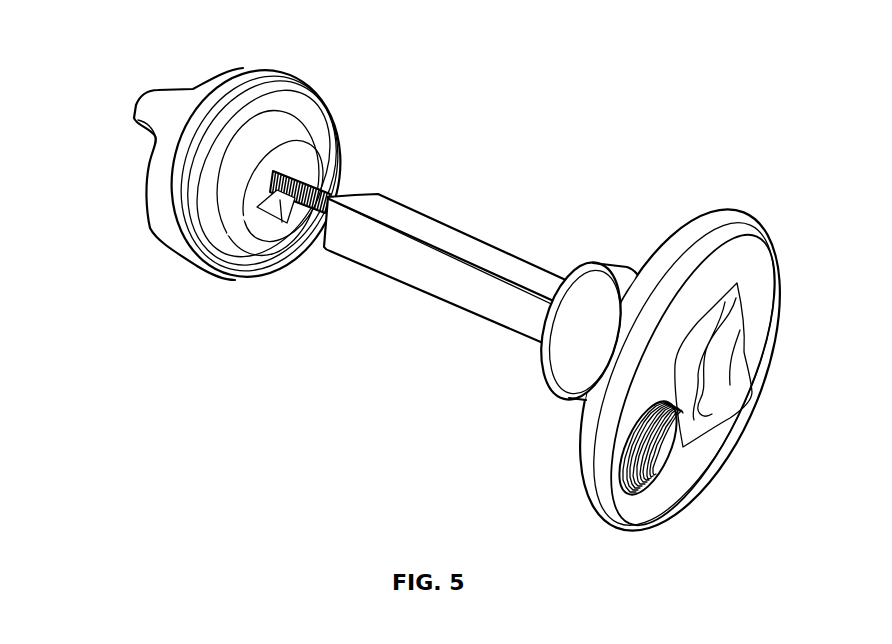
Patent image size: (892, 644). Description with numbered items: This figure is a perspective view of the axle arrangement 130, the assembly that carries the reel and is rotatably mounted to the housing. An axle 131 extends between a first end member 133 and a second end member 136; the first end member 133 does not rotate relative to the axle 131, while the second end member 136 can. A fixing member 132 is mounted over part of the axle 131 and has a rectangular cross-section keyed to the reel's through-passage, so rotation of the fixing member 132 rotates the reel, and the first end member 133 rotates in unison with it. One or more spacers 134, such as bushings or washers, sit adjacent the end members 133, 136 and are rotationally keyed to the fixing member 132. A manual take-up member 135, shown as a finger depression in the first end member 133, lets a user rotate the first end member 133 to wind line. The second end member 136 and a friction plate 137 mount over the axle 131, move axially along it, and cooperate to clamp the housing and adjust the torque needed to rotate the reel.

The axle arrangement 130 is at (482, 216).
The axle 131 is at (304, 170).
The fixing member 132 is at (442, 275).
The first end member 133 is at (749, 211).
The spacer 134 is at (261, 236).
The manual take-up member 135 is at (647, 465).
The second end member 136 is at (145, 191).
The friction plate 137 is at (313, 84).